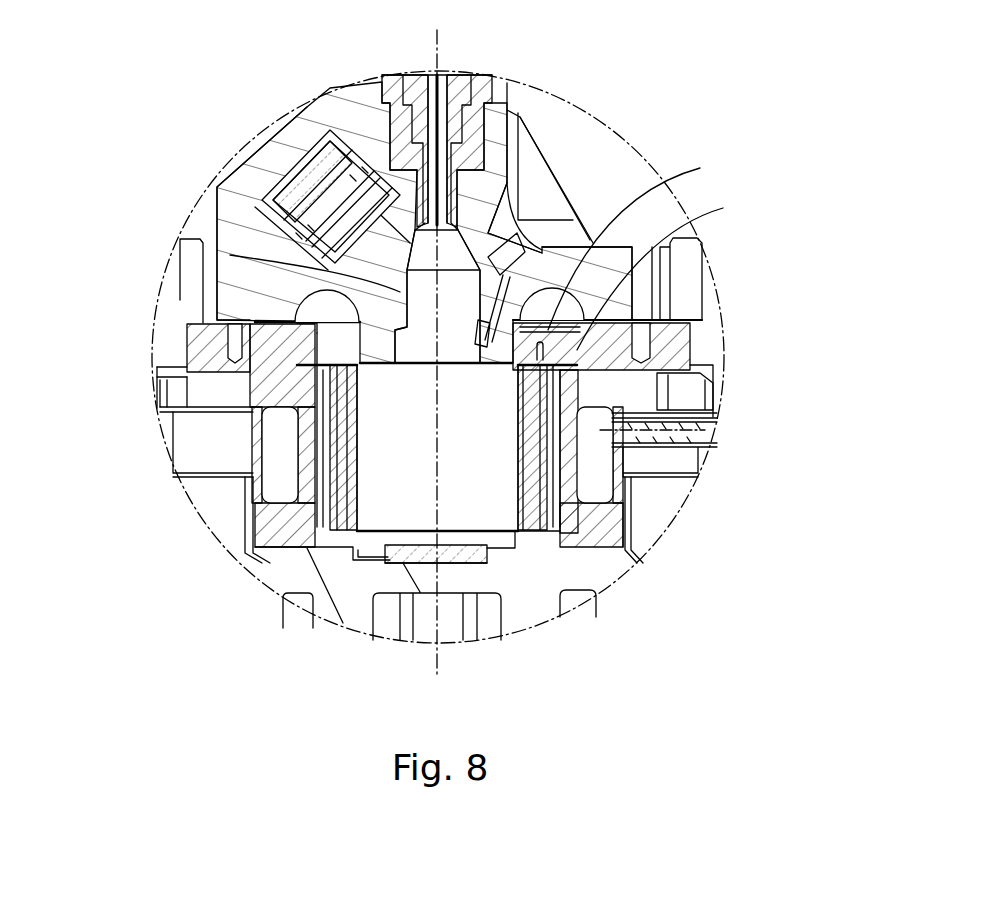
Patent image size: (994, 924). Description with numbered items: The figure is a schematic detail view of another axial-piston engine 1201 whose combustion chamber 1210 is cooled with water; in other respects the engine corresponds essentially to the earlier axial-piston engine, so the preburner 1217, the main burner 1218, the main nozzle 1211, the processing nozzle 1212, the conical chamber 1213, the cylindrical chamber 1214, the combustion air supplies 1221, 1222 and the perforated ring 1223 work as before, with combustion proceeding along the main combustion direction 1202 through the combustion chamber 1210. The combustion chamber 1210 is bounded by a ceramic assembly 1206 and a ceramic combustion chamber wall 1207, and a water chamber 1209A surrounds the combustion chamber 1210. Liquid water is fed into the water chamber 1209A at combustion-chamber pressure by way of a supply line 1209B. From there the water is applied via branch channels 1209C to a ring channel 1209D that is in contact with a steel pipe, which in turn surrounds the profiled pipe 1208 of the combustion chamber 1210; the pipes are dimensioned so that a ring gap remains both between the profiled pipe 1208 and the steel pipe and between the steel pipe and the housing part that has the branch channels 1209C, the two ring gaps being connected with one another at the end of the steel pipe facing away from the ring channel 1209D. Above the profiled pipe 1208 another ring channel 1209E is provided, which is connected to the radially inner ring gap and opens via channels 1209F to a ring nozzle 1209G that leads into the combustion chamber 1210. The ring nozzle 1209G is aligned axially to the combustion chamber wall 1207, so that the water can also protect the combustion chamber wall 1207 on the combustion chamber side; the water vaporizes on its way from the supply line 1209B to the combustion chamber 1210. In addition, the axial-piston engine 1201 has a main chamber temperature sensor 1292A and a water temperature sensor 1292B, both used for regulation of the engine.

The axial-piston engine 1201 is at (145, 175).
The main combustion direction 1202 is at (441, 369).
The ceramic assembly 1206 is at (502, 520).
The ceramic combustion chamber wall 1207 is at (270, 540).
The profiled pipe 1208 is at (300, 510).
The water chamber 1209A is at (278, 483).
The supply line for liquid water 1209B is at (700, 432).
The branch channel 1209C is at (610, 397).
The ring channel 1209D is at (265, 395).
The ring channel 1209E is at (250, 380).
The channel 1209F is at (173, 390).
The ring nozzle 1209G is at (362, 394).
The combustion chamber 1210 is at (505, 575).
The main nozzle 1211 is at (458, 257).
The processing nozzle 1212 is at (300, 165).
The conical chamber 1213 is at (487, 255).
The cylindrical chamber 1214 is at (400, 290).
The preburner 1217 is at (348, 118).
The main burner 1218 is at (610, 202).
The combustion air supply 1221 is at (298, 312).
The combustion air supply 1222 is at (300, 215).
The perforated ring 1223 is at (335, 182).
The main chamber temperature sensor 1292A is at (659, 243).
The water temperature sensor 1292B is at (687, 275).